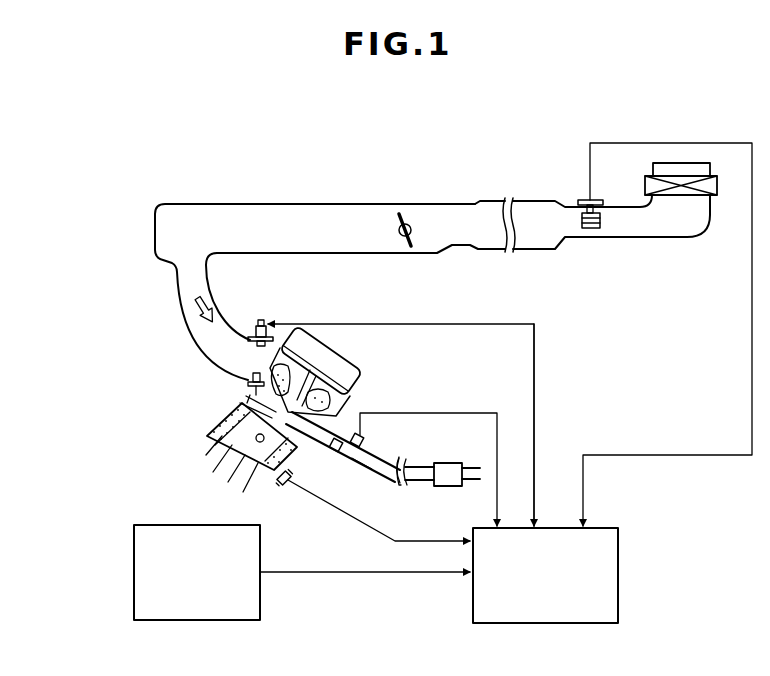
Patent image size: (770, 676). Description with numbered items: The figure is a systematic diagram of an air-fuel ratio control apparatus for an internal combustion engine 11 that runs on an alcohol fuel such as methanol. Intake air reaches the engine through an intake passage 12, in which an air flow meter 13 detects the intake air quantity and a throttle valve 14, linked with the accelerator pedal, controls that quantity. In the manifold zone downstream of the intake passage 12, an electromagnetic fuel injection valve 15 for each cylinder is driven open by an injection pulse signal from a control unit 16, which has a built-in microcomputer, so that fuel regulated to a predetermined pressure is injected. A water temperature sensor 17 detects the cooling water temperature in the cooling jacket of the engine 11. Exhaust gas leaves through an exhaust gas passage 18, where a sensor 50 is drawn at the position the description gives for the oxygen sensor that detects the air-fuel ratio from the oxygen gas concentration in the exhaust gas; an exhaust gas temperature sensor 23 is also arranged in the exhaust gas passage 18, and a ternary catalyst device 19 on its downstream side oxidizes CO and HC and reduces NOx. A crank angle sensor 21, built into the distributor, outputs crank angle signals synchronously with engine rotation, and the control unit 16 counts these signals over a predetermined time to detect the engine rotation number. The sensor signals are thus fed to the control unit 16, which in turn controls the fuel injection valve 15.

The engine 11 is at (352, 418).
The intake passage 12 is at (418, 204).
The air flow meter 13 is at (578, 200).
The throttle valve 14 is at (402, 249).
The electromagnetic fuel injection valve 15 is at (256, 320).
The control unit 16 is at (619, 592).
The water temperature sensor 17 is at (291, 477).
The exhaust gas passage 18 is at (362, 448).
The ternary catalyst device 19 is at (446, 467).
The crank angle sensor 21 is at (134, 578).
The exhaust gas temperature sensor 23 is at (340, 452).
The oxygen sensor 50 is at (366, 438).